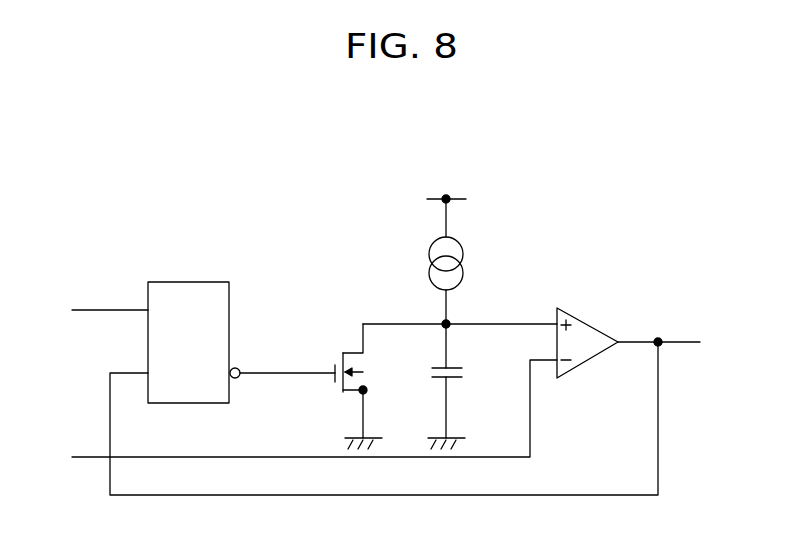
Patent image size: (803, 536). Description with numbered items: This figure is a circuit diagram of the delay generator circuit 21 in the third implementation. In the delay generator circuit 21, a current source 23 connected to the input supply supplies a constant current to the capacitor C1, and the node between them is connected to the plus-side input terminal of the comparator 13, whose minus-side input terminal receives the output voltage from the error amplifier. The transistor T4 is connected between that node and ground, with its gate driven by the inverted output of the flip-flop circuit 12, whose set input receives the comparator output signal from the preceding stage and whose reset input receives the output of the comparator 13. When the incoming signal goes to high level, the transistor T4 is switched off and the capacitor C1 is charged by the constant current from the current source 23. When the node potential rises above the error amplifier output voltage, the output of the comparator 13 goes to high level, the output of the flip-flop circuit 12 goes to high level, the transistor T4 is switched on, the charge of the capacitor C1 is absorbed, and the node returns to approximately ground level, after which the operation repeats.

The flip-flop circuit 12 is at (201, 282).
The comparator 13 is at (593, 327).
The delay generator circuit 21 is at (603, 205).
The current source 23 is at (463, 251).
The transistor T4 is at (350, 360).
The capacitor C1 is at (449, 366).